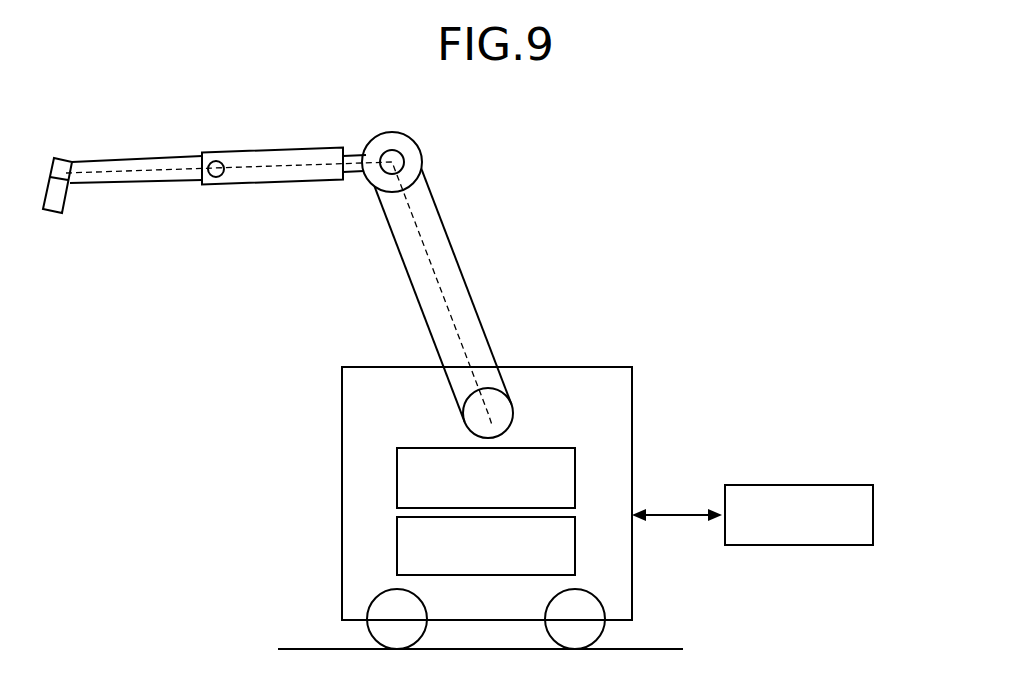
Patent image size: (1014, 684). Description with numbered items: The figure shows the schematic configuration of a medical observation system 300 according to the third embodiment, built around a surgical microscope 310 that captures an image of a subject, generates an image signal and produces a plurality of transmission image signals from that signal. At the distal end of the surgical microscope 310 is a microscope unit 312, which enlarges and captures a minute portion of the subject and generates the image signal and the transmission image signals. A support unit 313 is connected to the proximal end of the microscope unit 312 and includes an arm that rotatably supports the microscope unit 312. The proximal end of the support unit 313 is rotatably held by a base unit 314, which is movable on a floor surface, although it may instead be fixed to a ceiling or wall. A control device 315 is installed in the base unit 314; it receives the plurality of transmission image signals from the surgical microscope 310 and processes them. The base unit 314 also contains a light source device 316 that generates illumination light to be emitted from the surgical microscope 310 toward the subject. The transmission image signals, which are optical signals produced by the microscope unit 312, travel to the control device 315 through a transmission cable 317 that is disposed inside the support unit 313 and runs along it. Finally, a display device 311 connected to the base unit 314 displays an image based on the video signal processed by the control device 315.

The medical observation system 300 is at (662, 259).
The surgical microscope 310 is at (441, 197).
The display device 311 is at (873, 517).
The microscope unit 312 is at (58, 197).
The support unit 313 is at (258, 173).
The base unit 314 is at (342, 524).
The control device 315 is at (575, 473).
The light source device 316 is at (575, 540).
The transmission cable 317 is at (442, 287).